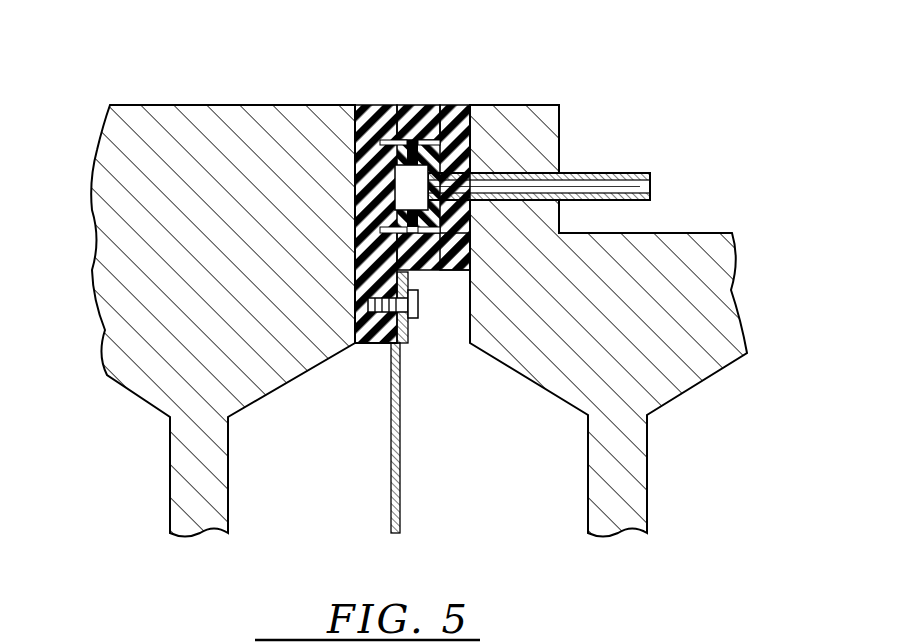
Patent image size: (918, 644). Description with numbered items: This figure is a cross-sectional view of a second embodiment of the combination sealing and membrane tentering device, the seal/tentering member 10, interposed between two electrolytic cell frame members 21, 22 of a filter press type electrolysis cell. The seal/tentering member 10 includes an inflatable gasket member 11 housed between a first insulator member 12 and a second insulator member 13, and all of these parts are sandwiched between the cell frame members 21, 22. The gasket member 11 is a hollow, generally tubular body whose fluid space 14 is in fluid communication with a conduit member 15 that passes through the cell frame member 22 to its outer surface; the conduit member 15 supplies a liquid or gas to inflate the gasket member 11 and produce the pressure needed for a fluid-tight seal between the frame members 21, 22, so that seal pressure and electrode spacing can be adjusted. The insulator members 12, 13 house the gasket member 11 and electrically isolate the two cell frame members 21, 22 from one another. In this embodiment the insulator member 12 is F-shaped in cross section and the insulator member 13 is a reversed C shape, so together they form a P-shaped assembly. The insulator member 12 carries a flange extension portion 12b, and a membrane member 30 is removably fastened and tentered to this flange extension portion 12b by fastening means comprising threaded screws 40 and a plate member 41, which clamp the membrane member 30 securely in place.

The seal/tentering member 10 is at (418, 210).
The inflatable gasket member 11 is at (396, 105).
The first insulator member 12 is at (395, 227).
The flange extension portion 12b is at (379, 345).
The second insulator member 13 is at (437, 105).
The fluid space 14 is at (422, 204).
The conduit member 15 is at (607, 173).
The electrolytic cell frame member 21 is at (205, 143).
The electrolytic cell frame member 22 is at (688, 262).
The membrane member 30 is at (392, 483).
The threaded screws 40 is at (420, 302).
The plate member 41 is at (412, 332).